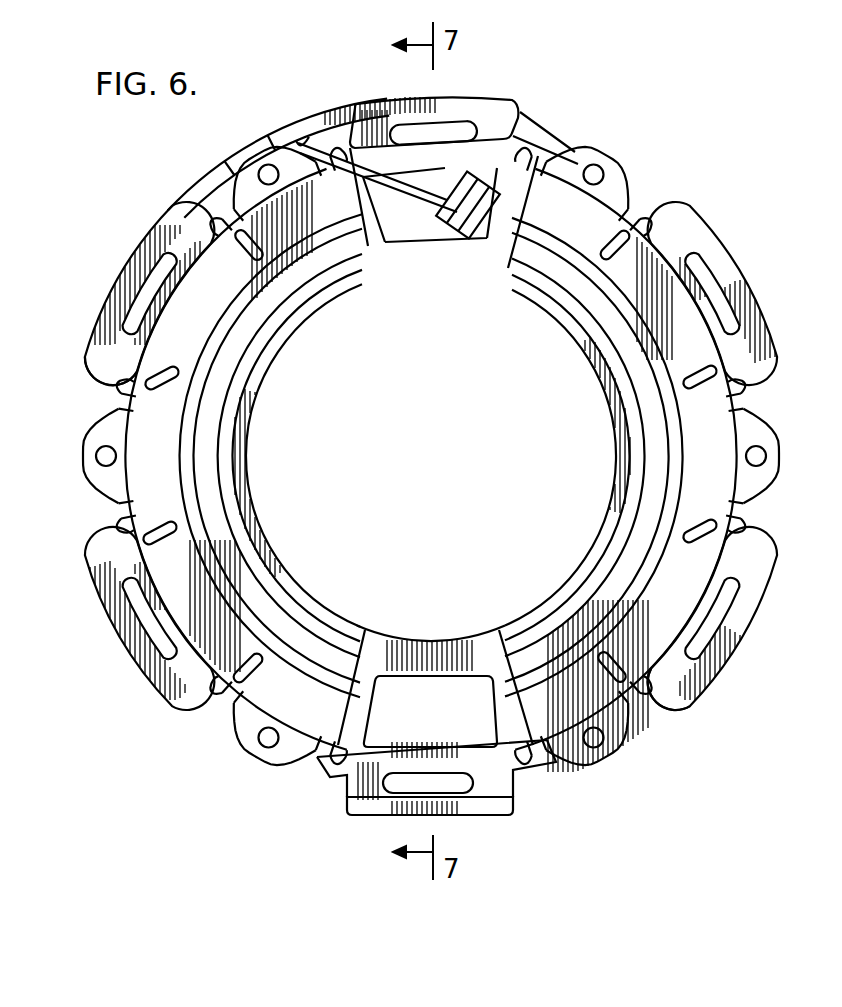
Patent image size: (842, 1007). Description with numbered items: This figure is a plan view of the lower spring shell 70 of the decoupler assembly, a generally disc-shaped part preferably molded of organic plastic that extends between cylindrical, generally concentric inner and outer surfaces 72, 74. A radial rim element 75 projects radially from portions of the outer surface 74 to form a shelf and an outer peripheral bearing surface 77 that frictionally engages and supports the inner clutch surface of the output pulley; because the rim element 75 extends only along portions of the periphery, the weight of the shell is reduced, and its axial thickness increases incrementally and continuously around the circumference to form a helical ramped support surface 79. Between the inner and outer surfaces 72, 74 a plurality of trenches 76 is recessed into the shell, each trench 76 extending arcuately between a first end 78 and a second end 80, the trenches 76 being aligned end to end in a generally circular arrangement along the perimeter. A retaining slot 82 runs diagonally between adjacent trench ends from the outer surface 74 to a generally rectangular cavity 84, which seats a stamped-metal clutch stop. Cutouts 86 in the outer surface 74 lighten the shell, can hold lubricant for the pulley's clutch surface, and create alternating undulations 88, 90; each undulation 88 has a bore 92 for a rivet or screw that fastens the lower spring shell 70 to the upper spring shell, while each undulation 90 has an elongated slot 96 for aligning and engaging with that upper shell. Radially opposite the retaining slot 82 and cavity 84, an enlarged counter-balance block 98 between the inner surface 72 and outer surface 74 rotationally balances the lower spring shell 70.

The lower spring shell 70 is at (617, 156).
The inner surface 72 is at (266, 540).
The outer surface 74 is at (745, 372).
The radial rim element 75 is at (143, 250).
The trenches 76 is at (230, 368).
The outer peripheral bearing surface 77 is at (112, 343).
The first end 78 is at (362, 254).
The ramped support surface 79 is at (195, 205).
The second end 80 is at (503, 270).
The retaining slot 82 is at (298, 140).
The rectangular cavity 84 is at (548, 156).
The cutouts 86 is at (750, 523).
The undulations 88 is at (781, 468).
The undulations 90 is at (670, 677).
The bore 92 is at (770, 447).
The elongated slot 96 is at (725, 612).
The counter-balance block 98 is at (358, 737).